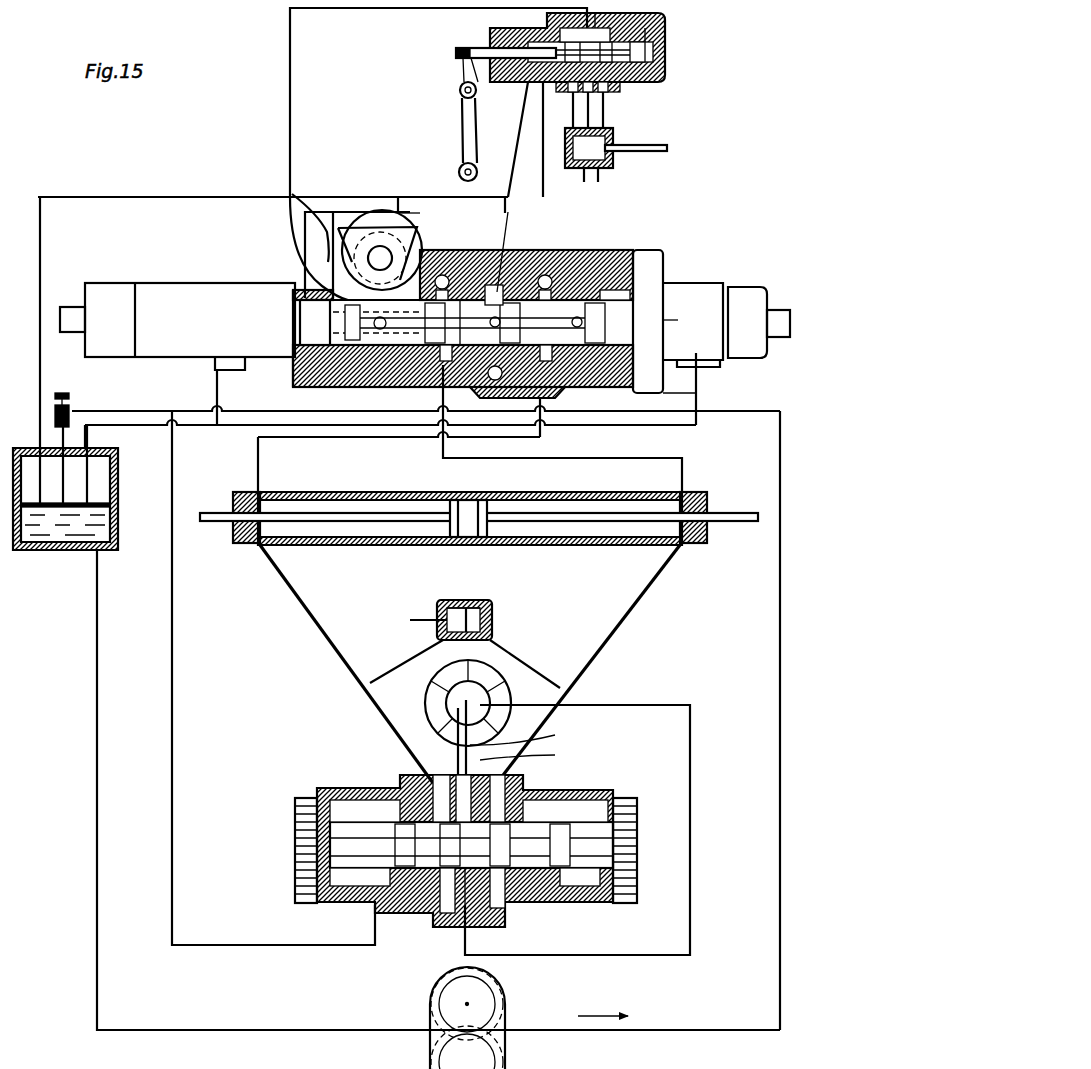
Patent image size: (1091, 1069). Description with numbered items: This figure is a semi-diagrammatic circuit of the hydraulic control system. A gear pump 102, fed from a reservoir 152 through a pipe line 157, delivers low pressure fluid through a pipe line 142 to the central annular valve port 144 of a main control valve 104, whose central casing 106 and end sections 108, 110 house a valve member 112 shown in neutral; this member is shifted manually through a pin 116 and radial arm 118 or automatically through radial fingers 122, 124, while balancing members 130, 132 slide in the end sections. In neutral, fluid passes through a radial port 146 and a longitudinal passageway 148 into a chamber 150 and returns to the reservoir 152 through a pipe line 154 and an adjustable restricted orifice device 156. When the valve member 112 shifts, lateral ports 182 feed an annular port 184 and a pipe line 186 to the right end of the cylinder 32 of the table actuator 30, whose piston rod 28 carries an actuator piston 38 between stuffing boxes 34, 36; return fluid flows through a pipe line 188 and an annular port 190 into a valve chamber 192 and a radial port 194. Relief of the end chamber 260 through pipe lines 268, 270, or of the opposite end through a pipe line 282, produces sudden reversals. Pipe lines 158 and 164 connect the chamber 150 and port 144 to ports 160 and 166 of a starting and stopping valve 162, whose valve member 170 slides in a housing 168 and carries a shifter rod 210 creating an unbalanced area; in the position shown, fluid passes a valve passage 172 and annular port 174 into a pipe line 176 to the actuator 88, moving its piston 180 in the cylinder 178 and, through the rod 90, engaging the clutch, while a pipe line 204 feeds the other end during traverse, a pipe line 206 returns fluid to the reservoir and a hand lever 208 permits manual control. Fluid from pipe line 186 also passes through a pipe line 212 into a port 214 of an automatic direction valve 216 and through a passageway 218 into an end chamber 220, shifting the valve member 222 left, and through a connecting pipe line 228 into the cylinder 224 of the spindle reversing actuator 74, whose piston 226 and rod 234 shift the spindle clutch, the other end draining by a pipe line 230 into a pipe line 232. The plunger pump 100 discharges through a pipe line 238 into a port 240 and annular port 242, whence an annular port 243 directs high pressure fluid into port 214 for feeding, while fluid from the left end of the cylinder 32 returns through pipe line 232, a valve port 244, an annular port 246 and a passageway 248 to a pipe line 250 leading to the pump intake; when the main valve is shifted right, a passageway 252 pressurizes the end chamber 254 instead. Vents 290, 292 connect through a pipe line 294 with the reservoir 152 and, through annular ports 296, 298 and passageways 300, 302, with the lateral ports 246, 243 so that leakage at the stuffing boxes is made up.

The shifter rod 210 is at (490, 48).
The annular valve port 174 is at (555, 30).
The port 160 is at (604, 20).
The valve passage 172 is at (650, 30).
The starting and stopping valve 162 is at (672, 35).
The housing 168 is at (665, 68).
The valve member 170 is at (640, 82).
The pipe line 204 is at (604, 110).
The piston 180 is at (612, 145).
The rod 90 is at (660, 150).
The hydraulic actuator 88 is at (602, 178).
The cylinder 178 is at (540, 160).
The pipe line 176 is at (573, 110).
The port 166 is at (532, 82).
The hand lever 208 is at (462, 118).
The pipe line 206 is at (398, 196).
The radial finger 122 is at (355, 192).
The pipe line 158 is at (290, 102).
The pin 116 is at (385, 254).
The radial finger 124 is at (412, 246).
The pipe line 164 is at (508, 212).
The valve member 112 is at (560, 265).
The main control valve 104 is at (666, 246).
The lateral ports 182 is at (467, 298).
The central annular valve port 144 is at (500, 293).
The central casing 106 is at (545, 272).
The end section 110 is at (694, 290).
The balancing member 132 is at (777, 305).
The balancing member 130 is at (73, 305).
The end section 108 is at (165, 298).
The arm 118 is at (300, 292).
The end chamber 260 is at (305, 312).
The radial port 146 is at (520, 325).
The radial port 194 is at (640, 320).
The longitudinal passageway 148 is at (366, 345).
The chamber 150 is at (352, 355).
The annular valve port 184 is at (430, 367).
The annular port 190 is at (545, 385).
The valve chamber 192 is at (696, 390).
The pipe line 282 is at (700, 392).
The device having adjustable restricted orifice 156 is at (74, 409).
The pipe line 270 is at (148, 424).
The pipe line 268 is at (226, 372).
The pipe line 154 is at (262, 411).
The reservoir 152 is at (118, 488).
The pipe line 188 is at (307, 438).
The pipe line 186 is at (442, 458).
The actuator piston 38 is at (468, 508).
The hydraulic table actuator 30 is at (592, 486).
The stuffing box 34 is at (240, 545).
The piston rod 28 is at (383, 537).
The cylinder 32 is at (510, 547).
The stuffing box 36 is at (700, 547).
The cylinder 224 is at (460, 600).
The rod 234 is at (426, 620).
The hydraulic actuator 74 is at (500, 607).
The piston 226 is at (492, 620).
The connecting pipe line 228 is at (545, 655).
The pipe line 212 is at (626, 622).
The pipe line 232 is at (325, 652).
The pipe line 230 is at (380, 675).
The plunger pump 100 is at (420, 699).
The pipe line 250 is at (655, 692).
The pipe line 142 is at (780, 716).
The annular port 246 is at (372, 795).
The annular port 296 is at (362, 798).
The valve port 244 is at (420, 790).
The discharge pipe line 238 is at (531, 733).
The port 240 is at (536, 753).
The port 214 is at (525, 778).
The annular port 298 is at (565, 792).
The passageway 218 is at (620, 794).
The automatic direction valve 216 is at (292, 812).
The passageway 252 is at (335, 800).
The passageway 300 is at (393, 836).
The passageway 302 is at (537, 866).
The end chamber 220 is at (614, 848).
The pipe line 294 is at (174, 910).
The end chamber 254 is at (325, 897).
The vent 290 is at (378, 905).
The annular port 243 is at (494, 912).
The vent 292 is at (547, 905).
The valve member 222 is at (588, 895).
The passageway 248 is at (400, 912).
The annular port 242 is at (458, 910).
The gear pump 102 is at (507, 1006).
The pipe line 157 is at (97, 878).